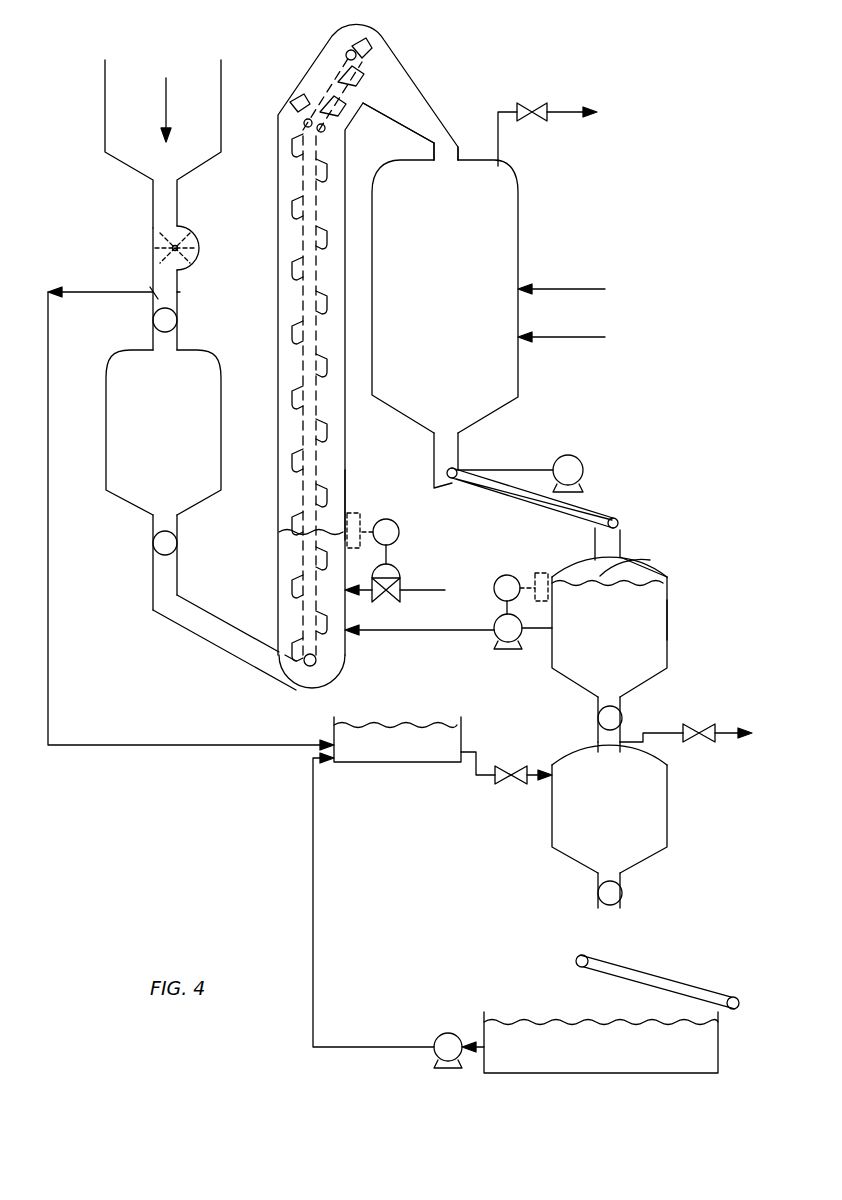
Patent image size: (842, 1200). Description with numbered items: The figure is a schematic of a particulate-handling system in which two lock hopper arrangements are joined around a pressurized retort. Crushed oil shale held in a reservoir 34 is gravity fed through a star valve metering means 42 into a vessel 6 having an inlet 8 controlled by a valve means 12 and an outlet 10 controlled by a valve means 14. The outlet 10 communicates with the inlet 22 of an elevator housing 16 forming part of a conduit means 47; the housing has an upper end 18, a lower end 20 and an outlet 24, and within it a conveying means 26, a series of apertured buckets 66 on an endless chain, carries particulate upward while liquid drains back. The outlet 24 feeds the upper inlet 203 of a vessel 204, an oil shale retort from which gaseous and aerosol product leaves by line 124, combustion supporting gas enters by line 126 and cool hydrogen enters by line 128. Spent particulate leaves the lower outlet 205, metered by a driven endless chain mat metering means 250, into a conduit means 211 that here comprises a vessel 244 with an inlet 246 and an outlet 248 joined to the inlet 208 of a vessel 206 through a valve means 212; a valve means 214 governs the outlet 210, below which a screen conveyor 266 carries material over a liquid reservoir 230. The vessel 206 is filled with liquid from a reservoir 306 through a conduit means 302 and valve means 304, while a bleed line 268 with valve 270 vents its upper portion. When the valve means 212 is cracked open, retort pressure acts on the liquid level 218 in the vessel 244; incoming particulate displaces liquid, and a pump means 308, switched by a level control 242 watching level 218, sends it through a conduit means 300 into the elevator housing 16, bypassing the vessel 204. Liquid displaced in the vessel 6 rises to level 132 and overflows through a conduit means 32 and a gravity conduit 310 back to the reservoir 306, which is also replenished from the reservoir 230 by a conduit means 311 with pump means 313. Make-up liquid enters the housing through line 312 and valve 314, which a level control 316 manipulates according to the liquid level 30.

The vessel 6 is at (222, 418).
The inlet 8 is at (178, 346).
The outlet 10 is at (179, 516).
The valve means 12 is at (192, 320).
The valve means 14 is at (192, 545).
The elevator housing 16 is at (350, 464).
The upper end 18 is at (348, 20).
The lower end 20 is at (328, 688).
The inlet 22 is at (288, 686).
The outlet 24 is at (367, 112).
The conveying means 26 is at (330, 406).
The liquid level 30 is at (352, 500).
The conduit means 32 is at (140, 284).
The reservoir 34 is at (202, 135).
The metering means 42 is at (203, 272).
The conduit means 47 is at (198, 656).
The buckets 66 is at (282, 520).
The line 124 is at (500, 140).
The line 126 is at (580, 288).
The line 128 is at (598, 336).
The liquid level 132 is at (160, 292).
The upper inlet 203 is at (432, 156).
The vessel 204 is at (471, 288).
The lower outlet 205 is at (437, 442).
The vessel 206 is at (669, 816).
The inlet 208 is at (594, 744).
The outlet 210 is at (622, 876).
The conduit means 211 is at (676, 572).
The valve means 212 is at (632, 714).
The valve means 214 is at (640, 894).
The liquid level 218 is at (648, 574).
The liquid reservoir 230 is at (611, 1057).
The level control 242 is at (505, 574).
The vessel 244 is at (669, 605).
The inlet 246 is at (618, 558).
The outlet 248 is at (622, 696).
The metering means 250 is at (605, 494).
The screen conveyor 266 is at (670, 978).
The bleed line 268 is at (728, 736).
The valve 270 is at (706, 726).
The conduit means 300 is at (460, 630).
The conduit means 302 is at (466, 778).
The valve means 304 is at (516, 784).
The liquid reservoir 306 is at (416, 755).
The pump means 308 is at (500, 652).
The conduit 310 is at (48, 536).
The conduit means 311 is at (314, 906).
The line 312 is at (404, 590).
The pump means 313 is at (450, 1032).
The valve 314 is at (396, 604).
The level control 316 is at (392, 519).